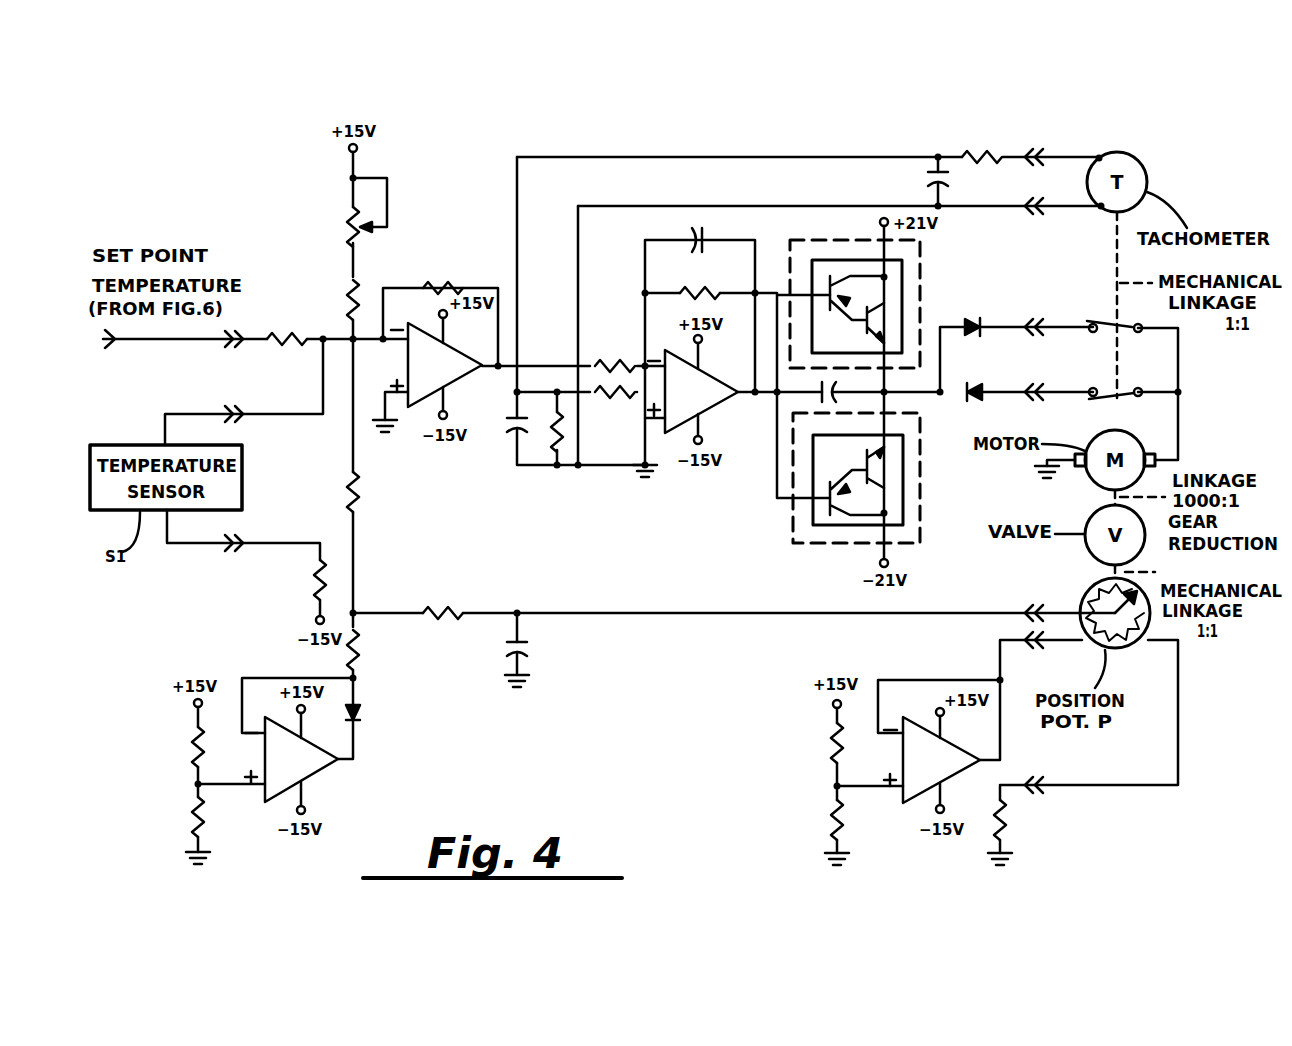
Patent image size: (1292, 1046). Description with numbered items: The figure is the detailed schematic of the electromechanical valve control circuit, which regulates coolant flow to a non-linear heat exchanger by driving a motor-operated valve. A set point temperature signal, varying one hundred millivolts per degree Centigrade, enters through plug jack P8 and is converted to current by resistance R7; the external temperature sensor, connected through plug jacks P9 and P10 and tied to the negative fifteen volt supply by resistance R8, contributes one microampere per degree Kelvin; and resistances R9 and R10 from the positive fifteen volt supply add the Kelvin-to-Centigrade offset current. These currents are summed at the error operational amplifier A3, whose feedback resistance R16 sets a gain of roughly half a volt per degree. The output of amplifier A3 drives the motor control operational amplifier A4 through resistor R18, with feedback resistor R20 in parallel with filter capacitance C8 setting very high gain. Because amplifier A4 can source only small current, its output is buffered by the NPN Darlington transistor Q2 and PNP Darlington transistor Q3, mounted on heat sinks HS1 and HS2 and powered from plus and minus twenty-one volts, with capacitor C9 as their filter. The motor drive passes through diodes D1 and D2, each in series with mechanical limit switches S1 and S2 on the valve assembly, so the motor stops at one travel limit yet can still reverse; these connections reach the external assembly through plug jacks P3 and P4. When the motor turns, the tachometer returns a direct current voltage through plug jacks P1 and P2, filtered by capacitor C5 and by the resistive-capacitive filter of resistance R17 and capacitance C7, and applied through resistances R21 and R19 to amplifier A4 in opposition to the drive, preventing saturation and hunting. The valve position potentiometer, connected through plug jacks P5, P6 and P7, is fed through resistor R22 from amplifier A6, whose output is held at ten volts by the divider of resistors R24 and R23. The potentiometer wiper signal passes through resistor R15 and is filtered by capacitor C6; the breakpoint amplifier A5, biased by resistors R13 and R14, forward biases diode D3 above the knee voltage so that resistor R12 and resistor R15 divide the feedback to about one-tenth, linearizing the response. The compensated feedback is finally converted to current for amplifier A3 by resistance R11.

The resistance R7 is at (298, 348).
The resistance R8 is at (313, 580).
The adjustable resistance R9 is at (348, 229).
The resistance R10 is at (348, 300).
The resistance R11 is at (360, 487).
The resistor R12 is at (361, 647).
The resistor R13 is at (193, 752).
The resistor R14 is at (193, 816).
The resistor R15 is at (431, 610).
The resistance R16 is at (426, 284).
The resistance R17 is at (552, 445).
The resistor R18 is at (597, 360).
The resistance R19 is at (600, 398).
The feedback resistor R20 is at (690, 290).
The resistance R21 is at (980, 150).
The resistor R22 is at (1008, 824).
The resistor R23 is at (830, 818).
The resistor R24 is at (830, 742).
The capacitor C5 is at (930, 180).
The capacitor C6 is at (528, 650).
The capacitance C7 is at (508, 430).
The filter capacitance C8 is at (696, 232).
The capacitor C9 is at (818, 400).
The diode D1 is at (975, 320).
The diode D2 is at (972, 404).
The diode D3 is at (364, 713).
The error operational amplifier A3 is at (436, 364).
The motor control operational amplifier A4 is at (693, 389).
The differential operational amplifier A5 is at (291, 759).
The operational amplifier A6 is at (932, 760).
The Darlington transistor Q2 is at (835, 258).
The Darlington transistor Q3 is at (835, 536).
The heat sink HS1 is at (920, 268).
The heat sink HS2 is at (920, 507).
The limit switch S1 is at (1108, 333).
The limit switch S2 is at (1110, 388).
The plug jack P1 is at (1038, 150).
The plug jack P2 is at (1040, 214).
The plug jack P3 is at (1036, 316).
The plug jack P4 is at (1040, 400).
The plug jack P5 is at (1038, 606).
The plug jack P6 is at (1040, 648).
The plug jack P7 is at (1038, 778).
The plug jack P8 is at (230, 348).
The plug jack P9 is at (235, 410).
The plug jack P10 is at (243, 554).